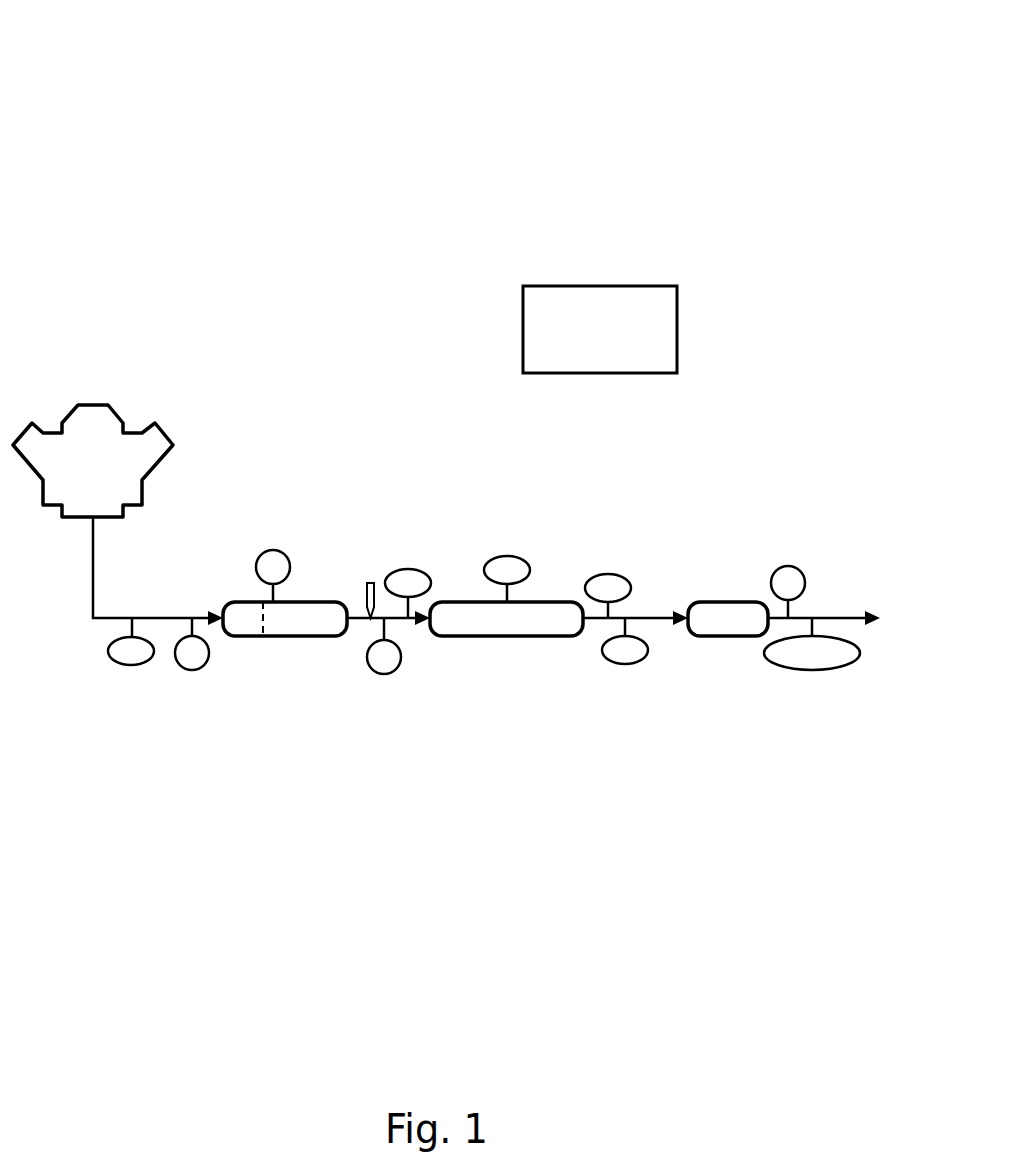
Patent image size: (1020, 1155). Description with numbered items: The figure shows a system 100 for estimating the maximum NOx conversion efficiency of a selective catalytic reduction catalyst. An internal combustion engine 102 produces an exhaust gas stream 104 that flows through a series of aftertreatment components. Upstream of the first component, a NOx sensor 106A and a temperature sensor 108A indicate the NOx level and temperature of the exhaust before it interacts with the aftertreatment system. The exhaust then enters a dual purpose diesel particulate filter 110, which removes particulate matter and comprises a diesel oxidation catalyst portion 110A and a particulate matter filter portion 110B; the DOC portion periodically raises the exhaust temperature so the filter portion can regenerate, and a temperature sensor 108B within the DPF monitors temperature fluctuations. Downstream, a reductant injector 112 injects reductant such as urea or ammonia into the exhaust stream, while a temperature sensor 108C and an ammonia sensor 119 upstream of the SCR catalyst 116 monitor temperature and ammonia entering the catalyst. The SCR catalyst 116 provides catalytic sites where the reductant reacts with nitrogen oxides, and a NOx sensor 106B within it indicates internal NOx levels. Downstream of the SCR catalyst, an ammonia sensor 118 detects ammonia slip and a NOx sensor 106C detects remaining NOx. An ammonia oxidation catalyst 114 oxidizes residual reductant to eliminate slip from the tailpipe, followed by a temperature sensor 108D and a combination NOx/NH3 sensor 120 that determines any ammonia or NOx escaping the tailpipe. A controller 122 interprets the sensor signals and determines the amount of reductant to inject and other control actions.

The system 100 is at (100, 66).
The internal combustion engine 102 is at (110, 478).
The exhaust gas stream 104 is at (92, 567).
The NOx sensor 106A is at (110, 650).
The NOx sensor 106B is at (528, 563).
The NOx sensor 106C is at (605, 657).
The temperature sensor 108A is at (182, 663).
The temperature sensor 108B is at (277, 550).
The temperature sensor 108C is at (367, 663).
The temperature sensor 108D is at (797, 568).
The diesel particulate filter 110 is at (280, 516).
The diesel oxidation catalyst portion 110A is at (237, 598).
The particulate matter filter portion 110B is at (327, 597).
The reductant injector 112 is at (371, 583).
The ammonia oxidation catalyst 114 is at (720, 600).
The selective catalytic reduction catalyst 116 is at (468, 638).
The ammonia sensor 118 is at (630, 578).
The ammonia sensor 119 is at (413, 568).
The combination NOx/NH3 sensor 120 is at (773, 662).
The controller 122 is at (583, 354).